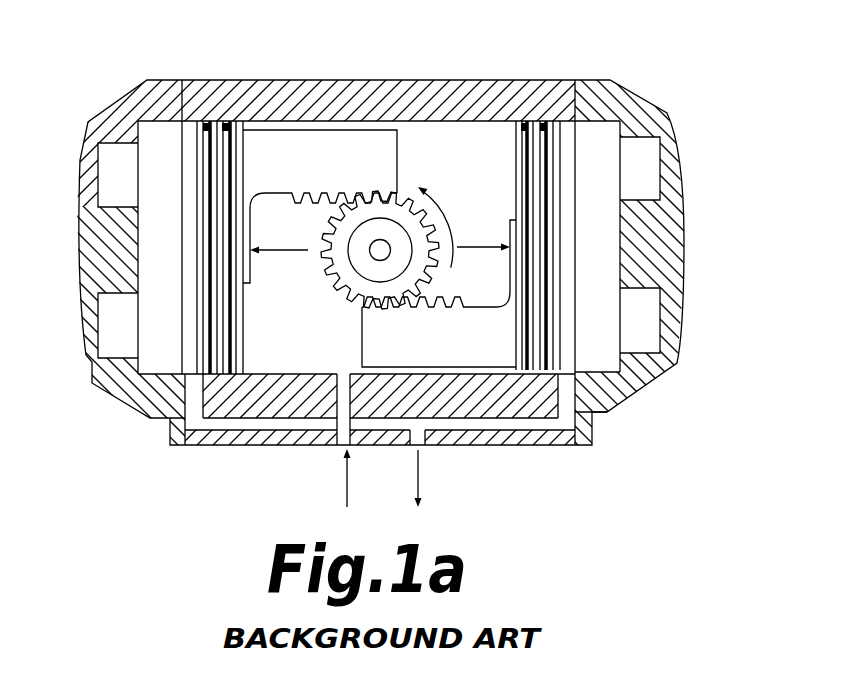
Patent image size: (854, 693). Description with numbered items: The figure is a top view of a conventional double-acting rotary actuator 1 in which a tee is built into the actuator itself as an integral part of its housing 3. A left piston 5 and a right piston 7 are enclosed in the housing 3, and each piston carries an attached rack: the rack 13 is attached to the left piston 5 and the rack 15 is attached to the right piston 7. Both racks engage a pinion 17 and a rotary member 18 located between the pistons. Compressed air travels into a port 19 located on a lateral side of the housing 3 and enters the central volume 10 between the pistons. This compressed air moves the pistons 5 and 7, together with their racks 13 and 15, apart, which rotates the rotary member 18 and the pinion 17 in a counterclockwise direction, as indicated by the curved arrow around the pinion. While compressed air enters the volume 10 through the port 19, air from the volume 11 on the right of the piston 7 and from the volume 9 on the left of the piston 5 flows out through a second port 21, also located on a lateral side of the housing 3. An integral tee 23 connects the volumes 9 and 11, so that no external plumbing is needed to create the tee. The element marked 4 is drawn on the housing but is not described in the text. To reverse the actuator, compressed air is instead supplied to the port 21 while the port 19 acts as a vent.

The rotary actuator 1 is at (270, 76).
The housing 3 is at (352, 80).
The cylinder bore 4 is at (430, 80).
The left piston 5 is at (215, 303).
The right piston 7 is at (540, 314).
The volume 9 is at (155, 237).
The volume 10 is at (307, 345).
The volume 11 is at (600, 236).
The rack 13 is at (337, 167).
The rack 15 is at (465, 347).
The pinion 17 is at (330, 276).
The rotary member 18 is at (380, 257).
The port 19 is at (343, 448).
The port 21 is at (422, 447).
The integral tee 23 is at (433, 420).